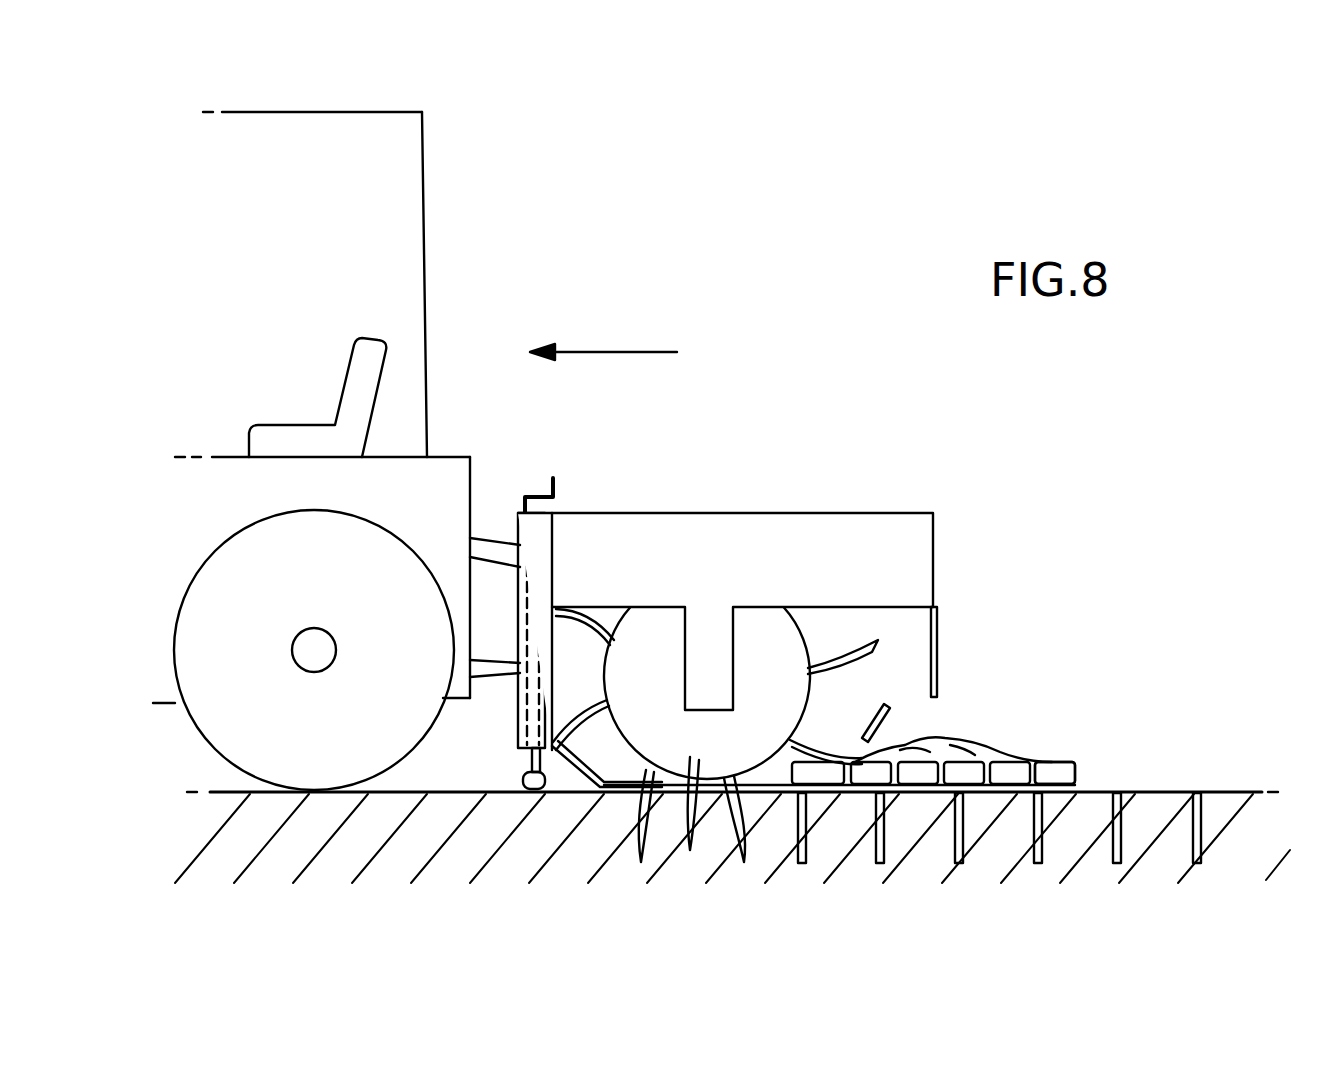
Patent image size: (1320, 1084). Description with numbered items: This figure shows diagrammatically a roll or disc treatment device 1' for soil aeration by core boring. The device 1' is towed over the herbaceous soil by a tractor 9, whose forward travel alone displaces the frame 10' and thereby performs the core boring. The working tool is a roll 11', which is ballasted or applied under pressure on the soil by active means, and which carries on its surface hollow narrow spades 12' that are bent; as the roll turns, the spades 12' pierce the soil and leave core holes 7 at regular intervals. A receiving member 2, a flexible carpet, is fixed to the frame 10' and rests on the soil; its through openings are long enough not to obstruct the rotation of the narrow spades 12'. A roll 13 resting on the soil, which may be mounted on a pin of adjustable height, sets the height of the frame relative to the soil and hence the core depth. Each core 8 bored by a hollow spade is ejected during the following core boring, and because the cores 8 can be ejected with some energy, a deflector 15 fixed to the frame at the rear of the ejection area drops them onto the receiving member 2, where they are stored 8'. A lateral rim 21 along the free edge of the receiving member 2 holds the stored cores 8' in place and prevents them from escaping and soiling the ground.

The tractor 9 is at (436, 345).
The roll-type device 1' is at (859, 666).
The frame 10' is at (796, 615).
The roll 11' is at (707, 771).
The hollow narrow spades 12' is at (739, 772).
The roll 13 is at (520, 796).
The deflector 15 is at (940, 664).
The core 8 is at (892, 720).
The stored cores 8' is at (953, 730).
The lateral rim 21 is at (1053, 768).
The receiving member 2 is at (1078, 788).
The core holes 7 is at (957, 866).